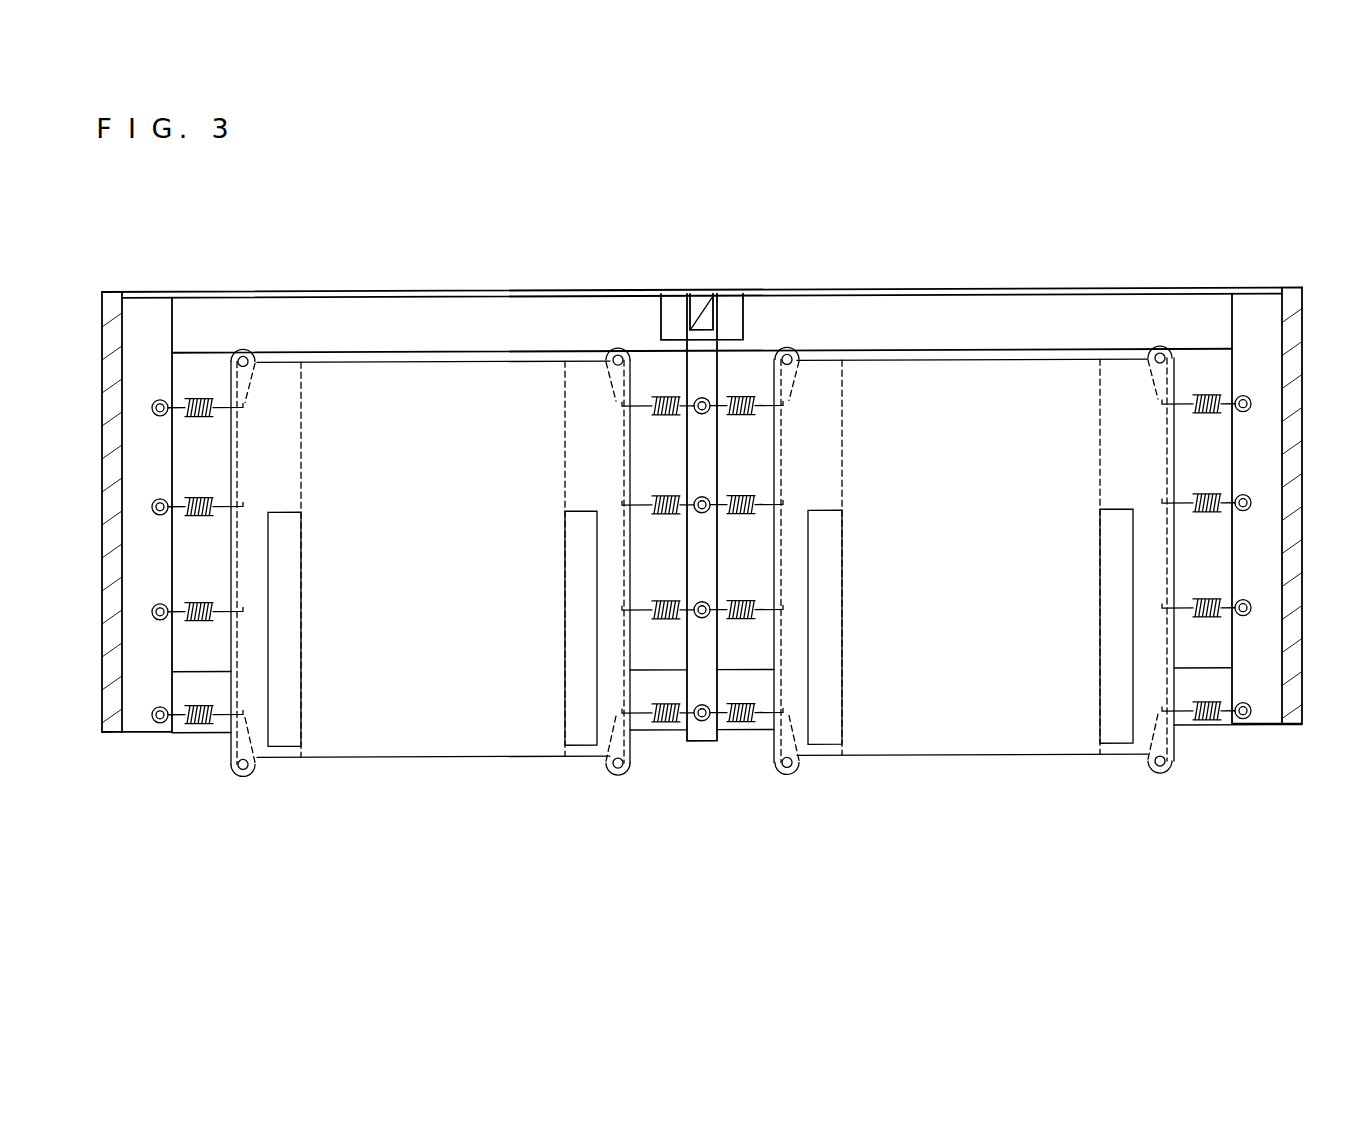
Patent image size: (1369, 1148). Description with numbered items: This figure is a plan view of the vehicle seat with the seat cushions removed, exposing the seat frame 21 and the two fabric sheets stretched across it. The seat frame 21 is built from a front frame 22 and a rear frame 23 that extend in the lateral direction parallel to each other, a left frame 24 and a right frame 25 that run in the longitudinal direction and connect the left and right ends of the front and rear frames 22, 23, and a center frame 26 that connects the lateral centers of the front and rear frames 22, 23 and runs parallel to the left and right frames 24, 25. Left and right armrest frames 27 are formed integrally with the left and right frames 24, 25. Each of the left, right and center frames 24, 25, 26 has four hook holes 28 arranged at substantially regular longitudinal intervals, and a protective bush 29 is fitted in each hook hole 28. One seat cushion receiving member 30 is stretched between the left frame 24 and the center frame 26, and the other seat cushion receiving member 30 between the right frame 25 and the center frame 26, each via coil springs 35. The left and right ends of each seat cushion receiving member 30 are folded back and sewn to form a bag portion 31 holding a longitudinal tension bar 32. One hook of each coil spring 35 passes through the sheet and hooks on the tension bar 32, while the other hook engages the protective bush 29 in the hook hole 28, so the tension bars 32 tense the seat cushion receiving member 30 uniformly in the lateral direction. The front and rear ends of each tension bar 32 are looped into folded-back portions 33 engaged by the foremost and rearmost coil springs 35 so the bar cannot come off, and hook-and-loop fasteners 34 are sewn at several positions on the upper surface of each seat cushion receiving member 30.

The seat frame 21 is at (453, 275).
The front frame 22 is at (216, 735).
The rear frame 23 is at (1030, 303).
The left frame 24 is at (1250, 541).
The right frame 25 is at (160, 548).
The center frame 26 is at (703, 745).
The armrest frame 27 is at (118, 325).
The hook hole 28 is at (153, 404).
The protective bush 29 is at (153, 412).
The seat cushion receiving member 30 is at (490, 750).
The bag portion 31 is at (256, 481).
The tension bar 32 is at (238, 476).
The folded-back portion 33 is at (249, 352).
The hook-and-loop fastener 34 is at (288, 591).
The coil spring 35 is at (197, 418).